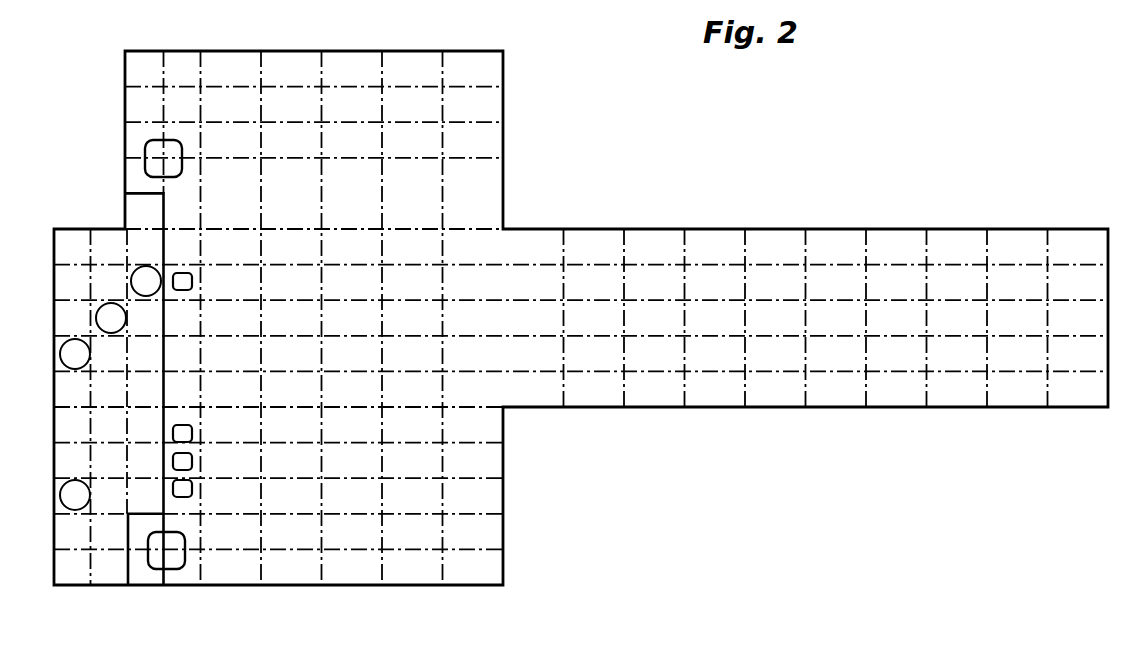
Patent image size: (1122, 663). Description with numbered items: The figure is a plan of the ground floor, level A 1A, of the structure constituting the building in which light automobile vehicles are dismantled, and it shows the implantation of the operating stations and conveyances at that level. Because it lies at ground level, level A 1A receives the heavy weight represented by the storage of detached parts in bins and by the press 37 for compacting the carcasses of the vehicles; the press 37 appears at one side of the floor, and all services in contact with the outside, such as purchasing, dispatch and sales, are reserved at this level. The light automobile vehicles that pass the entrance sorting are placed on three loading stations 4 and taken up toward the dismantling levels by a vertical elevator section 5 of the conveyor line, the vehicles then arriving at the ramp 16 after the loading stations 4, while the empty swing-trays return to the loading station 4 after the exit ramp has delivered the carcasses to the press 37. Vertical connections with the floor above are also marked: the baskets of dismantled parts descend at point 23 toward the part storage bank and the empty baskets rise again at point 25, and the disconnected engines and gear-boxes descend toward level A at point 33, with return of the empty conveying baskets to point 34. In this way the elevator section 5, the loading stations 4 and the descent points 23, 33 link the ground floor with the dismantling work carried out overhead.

The level A of structure 1A is at (745, 229).
The ramp 16 is at (147, 153).
The loading stations 4 is at (180, 561).
The point of return of empty baskets 25 is at (192, 281).
The point of descent of baskets 23 is at (192, 433).
The point of descent of engines and gear-boxes 33 is at (192, 462).
The point of return of empty conveying baskets 34 is at (192, 489).
The vertical elevator section 5 is at (110, 317).
The press 37 is at (75, 495).